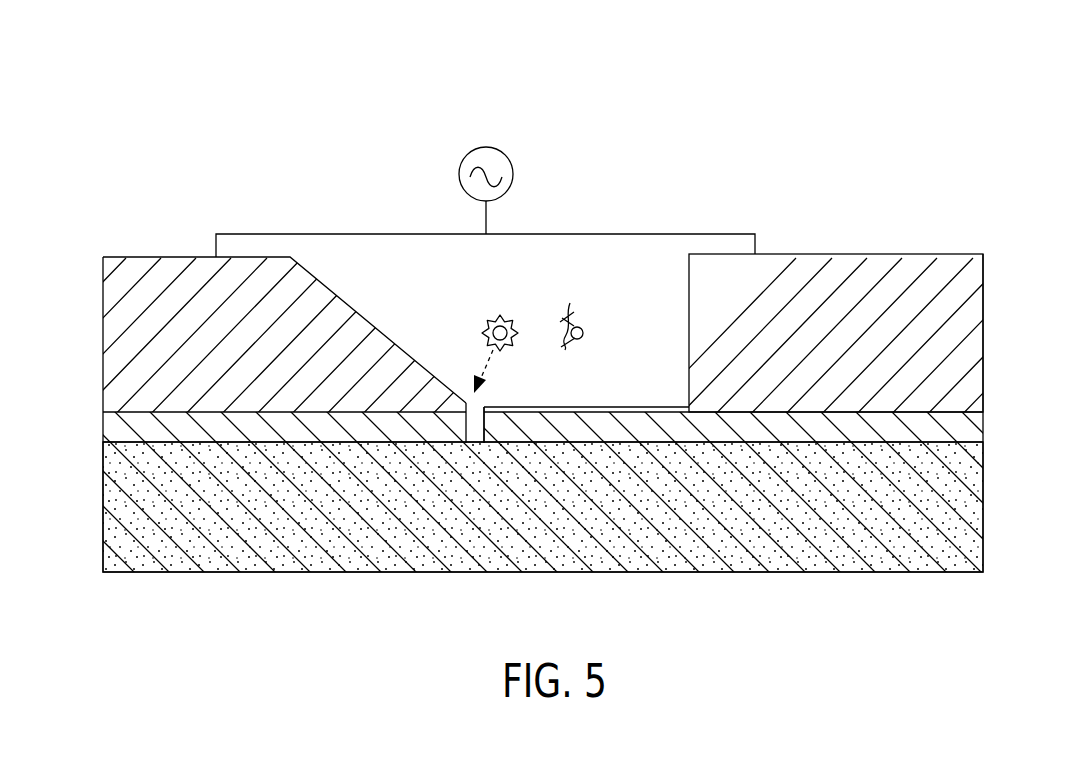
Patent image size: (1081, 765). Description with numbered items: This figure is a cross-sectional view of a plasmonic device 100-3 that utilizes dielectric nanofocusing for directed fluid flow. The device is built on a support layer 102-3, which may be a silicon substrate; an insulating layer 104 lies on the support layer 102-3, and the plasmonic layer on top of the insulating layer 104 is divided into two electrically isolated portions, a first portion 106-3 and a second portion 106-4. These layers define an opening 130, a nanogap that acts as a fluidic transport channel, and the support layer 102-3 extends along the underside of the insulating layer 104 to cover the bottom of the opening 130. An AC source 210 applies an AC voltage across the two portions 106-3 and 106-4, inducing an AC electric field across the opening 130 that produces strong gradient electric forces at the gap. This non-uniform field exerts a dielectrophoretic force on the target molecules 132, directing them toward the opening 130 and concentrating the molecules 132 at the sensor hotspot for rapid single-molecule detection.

The plasmonic device 100-3 is at (116, 122).
The support layer 102-3 is at (972, 503).
The insulating layer 104 is at (970, 430).
The first portion of the plasmonic layer 106-3 is at (103, 340).
The second portion of the plasmonic layer 106-4 is at (970, 345).
The opening 130 is at (478, 400).
The target molecules 132 is at (570, 303).
The AC source 210 is at (513, 173).